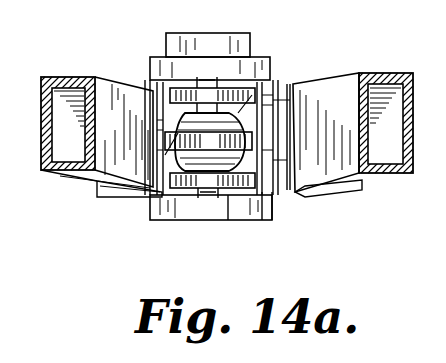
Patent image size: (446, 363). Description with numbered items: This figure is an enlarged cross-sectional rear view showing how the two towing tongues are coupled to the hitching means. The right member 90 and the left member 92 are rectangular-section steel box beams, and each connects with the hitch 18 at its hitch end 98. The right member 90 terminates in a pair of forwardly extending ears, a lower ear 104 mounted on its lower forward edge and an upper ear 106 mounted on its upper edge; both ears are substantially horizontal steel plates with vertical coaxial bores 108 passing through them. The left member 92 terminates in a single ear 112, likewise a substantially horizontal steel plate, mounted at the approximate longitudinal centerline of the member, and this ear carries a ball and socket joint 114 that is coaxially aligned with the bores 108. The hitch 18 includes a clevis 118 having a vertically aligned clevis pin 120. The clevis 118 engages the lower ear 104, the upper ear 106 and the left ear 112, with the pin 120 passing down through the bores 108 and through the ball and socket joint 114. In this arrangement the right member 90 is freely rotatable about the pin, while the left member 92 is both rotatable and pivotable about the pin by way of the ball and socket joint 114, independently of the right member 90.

The hitch 18 is at (218, 40).
The right member 90 is at (338, 80).
The left member 92 is at (115, 87).
The hitch end 98 is at (97, 195).
The lower ear 104 is at (246, 196).
The upper ear 106 is at (240, 112).
The bores 108 is at (210, 88).
The ear 112 is at (147, 197).
The ball and socket joint 114 is at (263, 82).
The clevis 118 is at (276, 212).
The clevis pin 120 is at (229, 198).